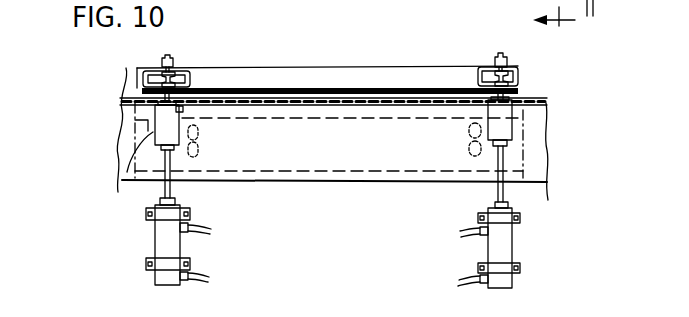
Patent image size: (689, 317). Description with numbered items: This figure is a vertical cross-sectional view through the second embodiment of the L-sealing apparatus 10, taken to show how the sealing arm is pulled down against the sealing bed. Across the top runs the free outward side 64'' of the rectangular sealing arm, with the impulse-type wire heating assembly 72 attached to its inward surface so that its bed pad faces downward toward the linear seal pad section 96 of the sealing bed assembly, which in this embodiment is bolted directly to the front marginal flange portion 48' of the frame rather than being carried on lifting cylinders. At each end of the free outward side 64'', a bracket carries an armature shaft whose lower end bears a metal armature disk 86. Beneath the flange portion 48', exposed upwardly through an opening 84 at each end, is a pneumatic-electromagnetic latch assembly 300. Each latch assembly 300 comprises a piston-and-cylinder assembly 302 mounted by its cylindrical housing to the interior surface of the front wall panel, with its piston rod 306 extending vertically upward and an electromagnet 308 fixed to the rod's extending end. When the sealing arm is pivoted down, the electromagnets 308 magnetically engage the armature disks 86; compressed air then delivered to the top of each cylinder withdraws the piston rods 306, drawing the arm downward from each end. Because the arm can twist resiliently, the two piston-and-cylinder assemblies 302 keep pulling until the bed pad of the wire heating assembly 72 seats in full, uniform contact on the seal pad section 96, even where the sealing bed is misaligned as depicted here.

The L-sealing apparatus 10 is at (565, 24).
The front marginal flange portion 48' is at (311, 128).
The wire heating assembly 72 is at (316, 78).
The free outward side of the sealing arm 64'' is at (333, 106).
The linear seal pad section 96 is at (467, 83).
The armature disk 86 is at (182, 112).
The opening 84 is at (136, 131).
The electromagnet 308 is at (121, 173).
The piston rod 306 is at (172, 185).
The pneumatic-electromagnetic latch assembly 300 is at (141, 223).
The piston-and-cylinder assembly 302 is at (155, 250).